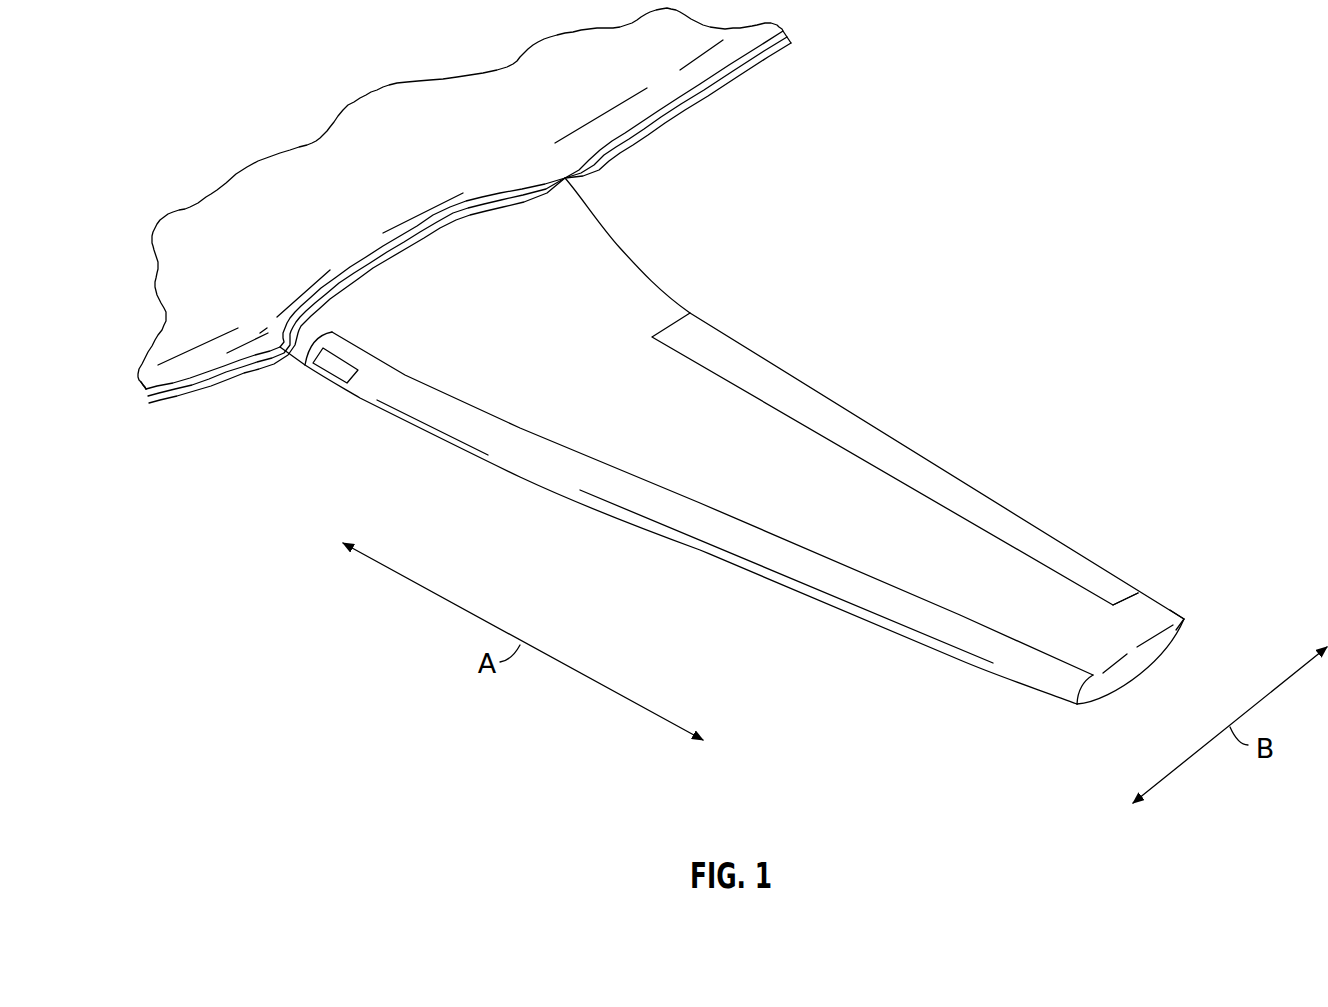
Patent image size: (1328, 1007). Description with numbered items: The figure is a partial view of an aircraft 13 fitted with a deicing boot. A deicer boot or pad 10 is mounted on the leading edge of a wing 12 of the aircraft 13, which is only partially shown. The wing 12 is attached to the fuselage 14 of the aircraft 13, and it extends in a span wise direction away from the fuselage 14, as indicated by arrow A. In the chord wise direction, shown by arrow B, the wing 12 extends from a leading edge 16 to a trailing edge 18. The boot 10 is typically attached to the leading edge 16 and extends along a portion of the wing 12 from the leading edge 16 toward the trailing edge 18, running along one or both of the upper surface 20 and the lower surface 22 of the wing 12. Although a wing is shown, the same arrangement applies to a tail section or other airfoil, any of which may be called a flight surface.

The deicer boot 10 is at (652, 543).
The wing 12 is at (840, 463).
The aircraft 13 is at (672, 129).
The fuselage 14 is at (205, 357).
The leading edge 16 is at (1078, 707).
The trailing edge 18 is at (1168, 605).
The upper surface 20 is at (1087, 618).
The lower surface 22 is at (1135, 675).